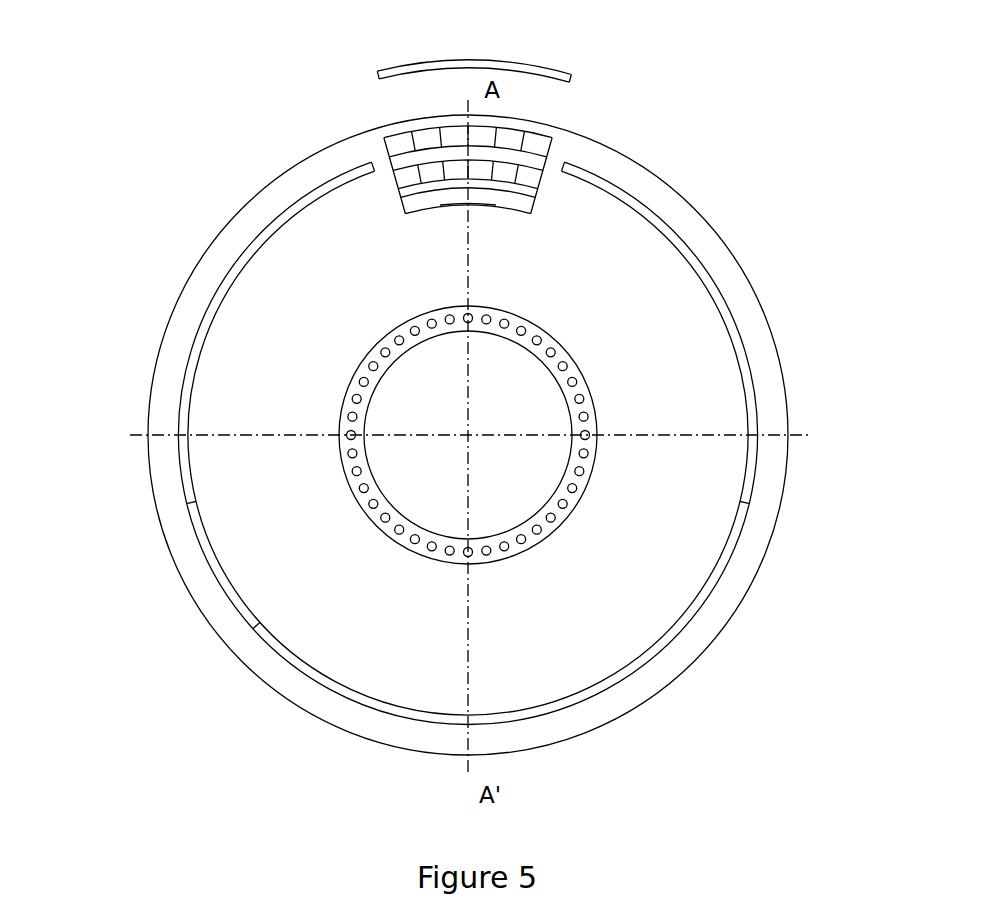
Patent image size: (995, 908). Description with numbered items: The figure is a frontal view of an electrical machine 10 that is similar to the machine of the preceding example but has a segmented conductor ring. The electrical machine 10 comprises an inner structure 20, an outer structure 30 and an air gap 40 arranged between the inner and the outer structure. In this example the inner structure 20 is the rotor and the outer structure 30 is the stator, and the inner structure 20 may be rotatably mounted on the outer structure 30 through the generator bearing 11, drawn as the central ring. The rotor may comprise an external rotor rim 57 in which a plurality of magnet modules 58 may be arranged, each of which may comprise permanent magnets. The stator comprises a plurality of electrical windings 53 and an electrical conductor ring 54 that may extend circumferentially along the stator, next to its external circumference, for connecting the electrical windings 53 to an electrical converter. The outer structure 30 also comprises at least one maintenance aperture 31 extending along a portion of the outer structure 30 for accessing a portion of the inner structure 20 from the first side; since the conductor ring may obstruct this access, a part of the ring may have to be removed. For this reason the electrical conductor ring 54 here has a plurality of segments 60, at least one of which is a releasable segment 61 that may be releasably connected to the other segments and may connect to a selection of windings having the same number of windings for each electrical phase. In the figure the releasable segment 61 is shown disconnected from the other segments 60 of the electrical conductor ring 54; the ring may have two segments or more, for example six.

The electrical machine 10 is at (100, 538).
The generator bearing 11 is at (560, 522).
The inner structure 20 is at (428, 197).
The outer structure 30 is at (248, 647).
The maintenance aperture 31 is at (487, 208).
The air gap 40 is at (582, 141).
The electrical windings 53 is at (403, 142).
The electrical conductor ring 54 is at (304, 720).
The external rotor rim 57 is at (500, 185).
The magnet modules 58 is at (528, 176).
The segments 60 is at (185, 390).
The releasable segment 61 is at (510, 66).